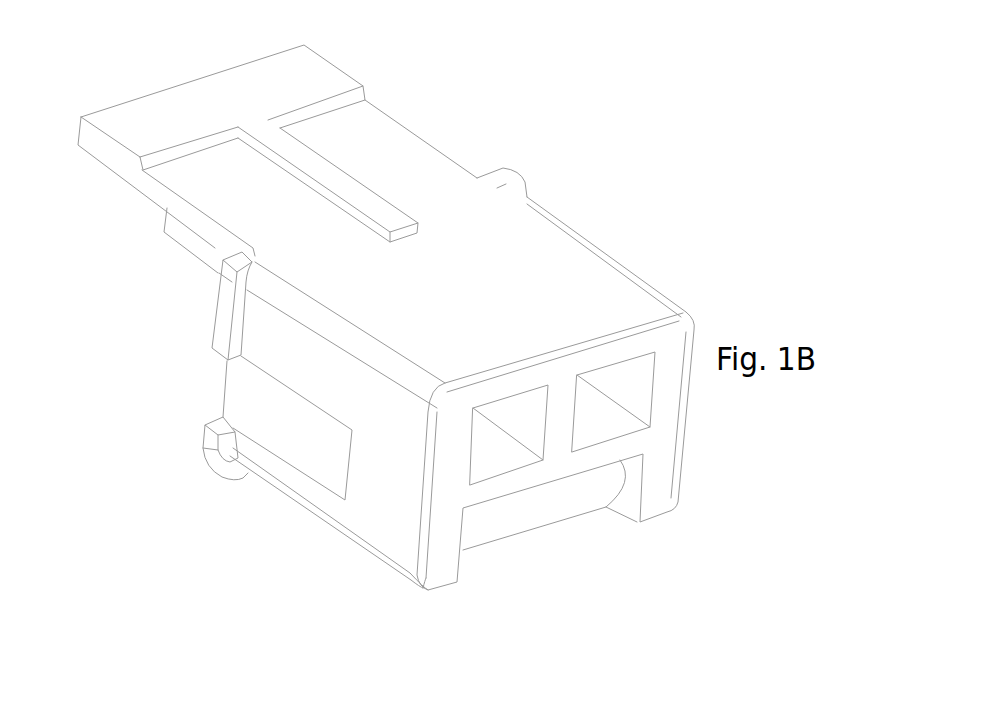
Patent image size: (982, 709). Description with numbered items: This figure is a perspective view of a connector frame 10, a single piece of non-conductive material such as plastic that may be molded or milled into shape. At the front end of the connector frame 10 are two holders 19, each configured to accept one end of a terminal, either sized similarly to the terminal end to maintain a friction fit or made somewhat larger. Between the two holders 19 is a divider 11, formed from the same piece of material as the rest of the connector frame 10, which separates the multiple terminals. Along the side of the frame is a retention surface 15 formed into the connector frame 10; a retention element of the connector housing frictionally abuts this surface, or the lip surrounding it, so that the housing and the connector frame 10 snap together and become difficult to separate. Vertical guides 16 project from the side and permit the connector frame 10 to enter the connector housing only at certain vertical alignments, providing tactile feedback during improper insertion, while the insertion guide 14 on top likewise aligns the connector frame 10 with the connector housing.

The connector frame 10 is at (602, 153).
The divider 11 is at (163, 228).
The insertion guide 14 is at (303, 142).
The retention surface 15 is at (290, 466).
The vertical guides 16 is at (212, 342).
The holders 19 is at (652, 400).